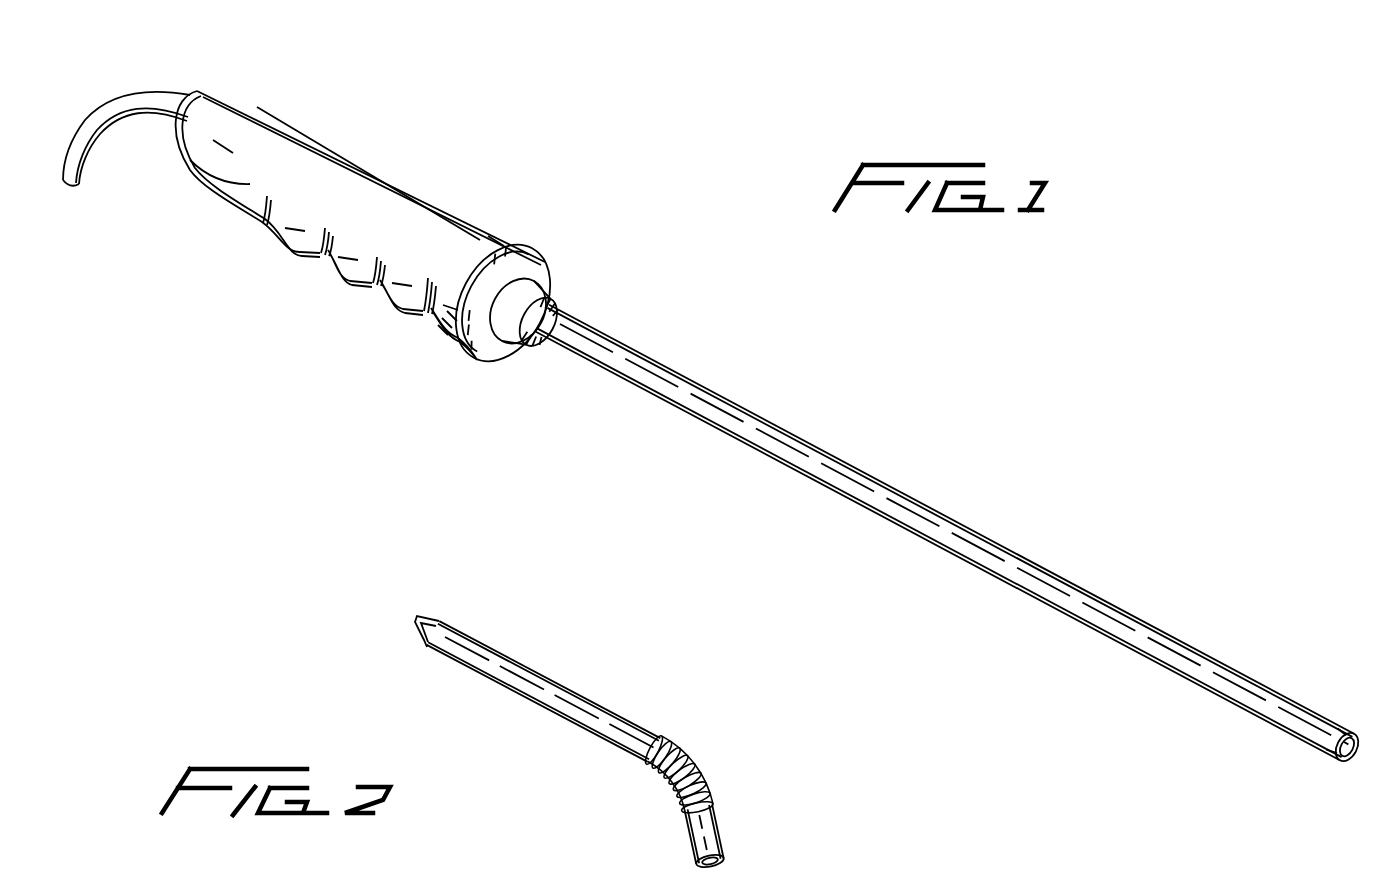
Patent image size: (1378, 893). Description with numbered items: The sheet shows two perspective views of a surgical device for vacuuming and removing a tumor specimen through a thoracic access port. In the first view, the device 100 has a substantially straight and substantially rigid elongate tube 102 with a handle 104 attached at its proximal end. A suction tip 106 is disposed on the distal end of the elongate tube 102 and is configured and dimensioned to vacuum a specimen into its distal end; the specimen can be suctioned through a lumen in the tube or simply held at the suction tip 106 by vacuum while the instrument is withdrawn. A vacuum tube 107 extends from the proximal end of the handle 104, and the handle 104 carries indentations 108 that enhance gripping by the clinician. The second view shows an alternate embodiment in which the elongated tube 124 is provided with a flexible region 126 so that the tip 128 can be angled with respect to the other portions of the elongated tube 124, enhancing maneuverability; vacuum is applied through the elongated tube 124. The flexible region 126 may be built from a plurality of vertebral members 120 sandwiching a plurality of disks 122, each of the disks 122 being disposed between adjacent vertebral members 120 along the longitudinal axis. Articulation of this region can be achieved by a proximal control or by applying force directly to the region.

In FIG. 1, the surgical device 100 is at (530, 478).
In FIG. 1, the elongate tube 102 is at (815, 455).
In FIG. 1, the handle 104 is at (390, 208).
In FIG. 1, the suction tip 106 is at (1340, 790).
In FIG. 1, the vacuum tube 107 is at (130, 93).
In FIG. 1, the indentations 108 is at (364, 278).
In FIG. 2, the vertebral members 120 is at (673, 786).
In FIG. 2, the disks 122 is at (705, 790).
In FIG. 2, the elongated tube 124 is at (532, 681).
In FIG. 2, the flexible region 126 is at (690, 755).
In FIG. 2, the tip 128 is at (748, 819).